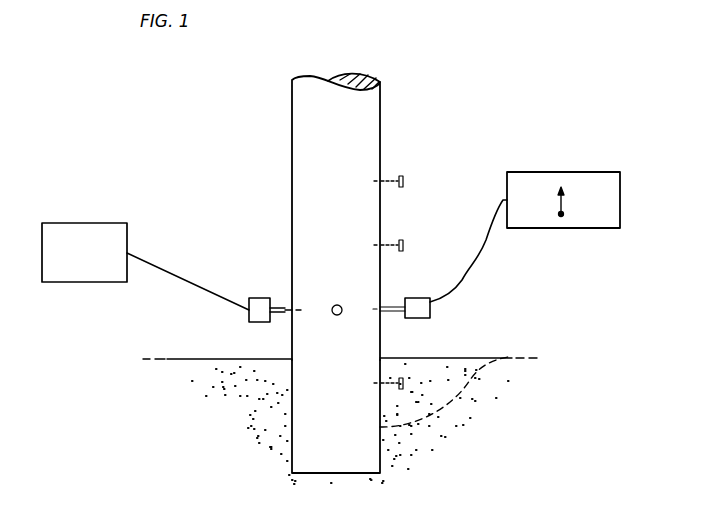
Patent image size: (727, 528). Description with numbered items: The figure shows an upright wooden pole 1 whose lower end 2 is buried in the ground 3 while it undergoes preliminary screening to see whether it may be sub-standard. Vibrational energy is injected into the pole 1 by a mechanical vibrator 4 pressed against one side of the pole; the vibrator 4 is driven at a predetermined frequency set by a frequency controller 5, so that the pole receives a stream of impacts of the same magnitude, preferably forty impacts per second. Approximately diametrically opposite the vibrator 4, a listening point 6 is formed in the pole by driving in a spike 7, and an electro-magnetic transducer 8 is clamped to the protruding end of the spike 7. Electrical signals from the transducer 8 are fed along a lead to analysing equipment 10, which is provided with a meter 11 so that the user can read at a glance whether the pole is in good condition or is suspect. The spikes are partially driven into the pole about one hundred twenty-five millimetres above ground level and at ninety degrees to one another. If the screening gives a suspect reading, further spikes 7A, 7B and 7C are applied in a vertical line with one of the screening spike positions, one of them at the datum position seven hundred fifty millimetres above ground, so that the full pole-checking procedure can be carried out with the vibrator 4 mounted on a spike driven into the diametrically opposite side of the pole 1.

The wooden pole 1 is at (332, 241).
The lower end 2 is at (343, 448).
The ground 3 is at (215, 428).
The mechanical vibrator 4 is at (258, 300).
The frequency controller 5 is at (71, 228).
The listening point 6 is at (389, 189).
The spike 7 is at (334, 306).
The spike 7A is at (393, 251).
The spike 7B is at (396, 176).
The spike 7C is at (397, 387).
The electro-magnetic transducer 8 is at (424, 311).
The analysing equipment 10 is at (533, 231).
The meter 11 is at (568, 202).